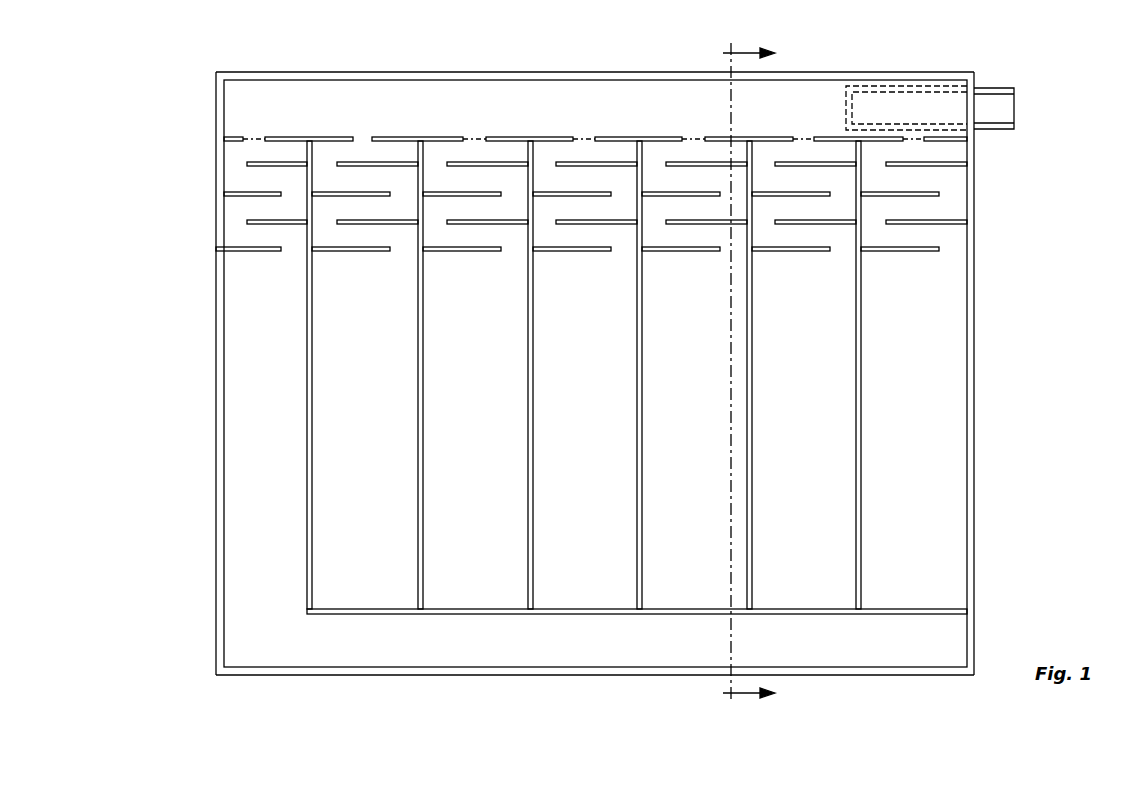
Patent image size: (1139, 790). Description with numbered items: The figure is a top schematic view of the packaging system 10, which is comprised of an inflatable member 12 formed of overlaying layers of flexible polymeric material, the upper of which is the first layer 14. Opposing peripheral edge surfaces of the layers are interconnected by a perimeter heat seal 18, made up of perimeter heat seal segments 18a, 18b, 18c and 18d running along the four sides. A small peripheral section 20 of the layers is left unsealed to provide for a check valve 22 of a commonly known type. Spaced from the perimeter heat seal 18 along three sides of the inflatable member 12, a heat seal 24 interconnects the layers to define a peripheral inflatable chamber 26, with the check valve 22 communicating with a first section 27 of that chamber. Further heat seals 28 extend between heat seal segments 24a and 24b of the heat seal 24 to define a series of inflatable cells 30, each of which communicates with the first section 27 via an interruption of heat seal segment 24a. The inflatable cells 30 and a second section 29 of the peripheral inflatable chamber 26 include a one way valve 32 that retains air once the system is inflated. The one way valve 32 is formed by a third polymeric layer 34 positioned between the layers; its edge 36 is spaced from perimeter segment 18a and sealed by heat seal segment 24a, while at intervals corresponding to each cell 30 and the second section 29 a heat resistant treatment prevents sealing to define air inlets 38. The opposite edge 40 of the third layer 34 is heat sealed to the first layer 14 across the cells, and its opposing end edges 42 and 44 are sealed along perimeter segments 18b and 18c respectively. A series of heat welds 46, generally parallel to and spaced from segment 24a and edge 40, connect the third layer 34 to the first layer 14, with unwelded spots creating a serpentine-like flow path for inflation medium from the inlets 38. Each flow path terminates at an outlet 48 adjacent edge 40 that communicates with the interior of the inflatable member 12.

The packaging system 10 is at (1058, 160).
The inflatable member 12 is at (212, 491).
The first layer 14 is at (960, 275).
The perimeter heat seal 18 is at (622, 75).
The peripheral heat seal segment 18a is at (543, 75).
The perimeter heat seal segment 18b is at (222, 413).
The perimeter heat seal segment 18c is at (970, 337).
The perimeter heat seal segment 18d is at (410, 672).
The peripheral section 20 is at (968, 108).
The check valve 22 is at (1013, 106).
The heat seal 24 is at (412, 136).
The heat seal segment 24a is at (520, 132).
The heat seal segment 24b is at (675, 608).
The peripheral inflatable chamber 26 is at (274, 345).
The first section 27 is at (664, 98).
The heat seals 28 is at (423, 404).
The second section 29 is at (235, 295).
The inflatable cells 30 is at (374, 343).
The one way valve 32 is at (233, 180).
The third polymeric layer 34 is at (922, 262).
The edge 36 is at (440, 133).
The air inlets 38 is at (254, 132).
The edge 40 is at (447, 255).
The end edge 42 is at (217, 212).
The end edge 44 is at (975, 245).
The heat welds 46 is at (295, 168).
The outlet 48 is at (295, 252).